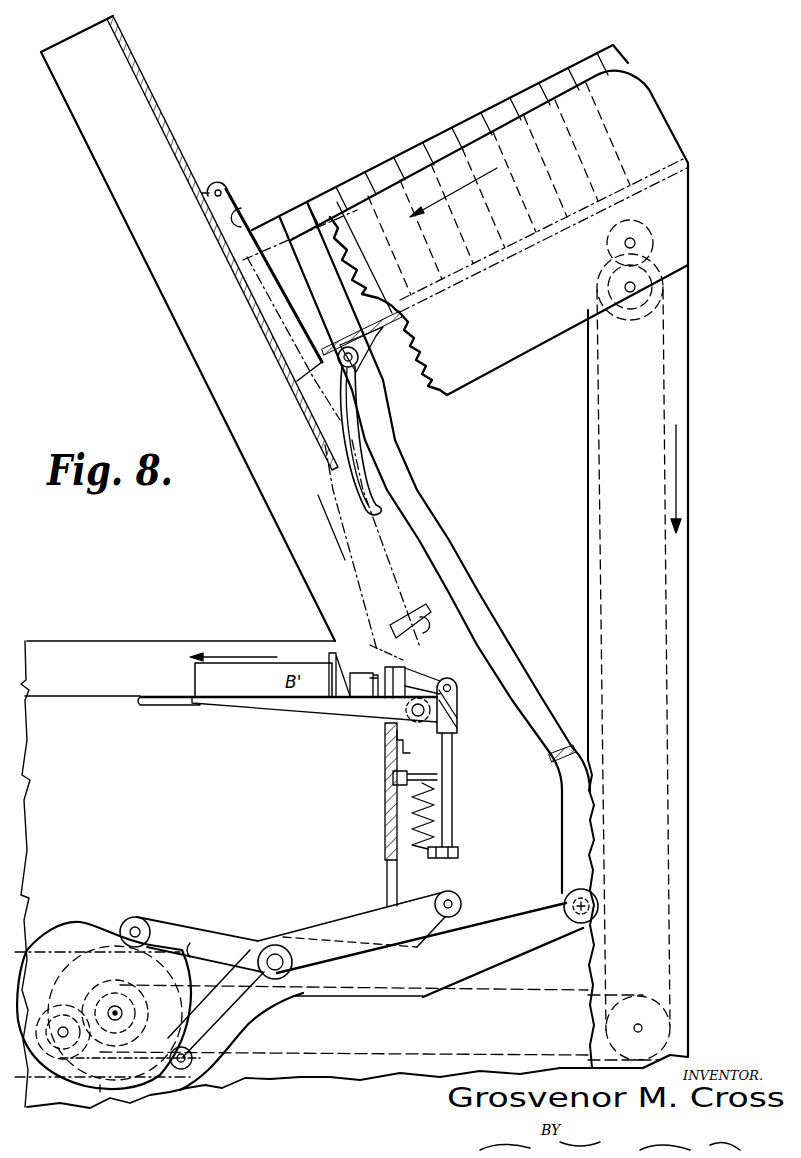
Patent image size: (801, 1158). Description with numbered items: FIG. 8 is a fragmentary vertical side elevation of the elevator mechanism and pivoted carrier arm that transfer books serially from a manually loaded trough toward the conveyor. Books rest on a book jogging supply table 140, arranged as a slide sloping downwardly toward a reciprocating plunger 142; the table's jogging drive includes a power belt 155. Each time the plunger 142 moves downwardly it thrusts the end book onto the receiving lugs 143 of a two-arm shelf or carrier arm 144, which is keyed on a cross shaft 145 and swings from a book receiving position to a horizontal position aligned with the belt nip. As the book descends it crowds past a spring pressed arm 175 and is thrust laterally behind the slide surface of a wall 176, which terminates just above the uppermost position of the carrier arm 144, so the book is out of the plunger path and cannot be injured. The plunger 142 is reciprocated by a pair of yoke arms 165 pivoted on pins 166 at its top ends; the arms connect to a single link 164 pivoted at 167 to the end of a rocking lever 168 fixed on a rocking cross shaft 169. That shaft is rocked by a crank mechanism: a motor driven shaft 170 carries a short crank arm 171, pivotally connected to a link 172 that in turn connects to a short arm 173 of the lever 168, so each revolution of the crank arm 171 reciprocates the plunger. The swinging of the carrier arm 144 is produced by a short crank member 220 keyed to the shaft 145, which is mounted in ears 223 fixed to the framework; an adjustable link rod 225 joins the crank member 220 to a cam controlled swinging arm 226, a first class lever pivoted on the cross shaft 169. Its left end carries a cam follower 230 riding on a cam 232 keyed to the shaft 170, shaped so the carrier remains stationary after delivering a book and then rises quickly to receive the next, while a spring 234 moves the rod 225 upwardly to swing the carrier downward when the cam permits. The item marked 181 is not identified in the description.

The supply table 140 is at (492, 263).
The reciprocating plunger 142 is at (302, 388).
The receiving lug 143 is at (337, 655).
The carrier arm 144 is at (345, 560).
The cross shaft 145 is at (424, 712).
The power belt 155 is at (638, 615).
The link 164 is at (560, 852).
The yoke arm 165 is at (237, 212).
The pin 166 is at (220, 190).
The pivot 167 is at (565, 893).
The rocking lever 168 is at (430, 950).
The rocking cross shaft 169 is at (282, 992).
The shaft 170 is at (118, 1032).
The crank arm 171 is at (115, 1013).
The link 172 is at (150, 1082).
The short arm 173 is at (276, 1018).
The spring pressed arm 175 is at (352, 482).
The wall 176 is at (328, 418).
The stop block 181 is at (360, 690).
The crank member 220 is at (440, 678).
The ears 223 is at (413, 678).
The adjustable link rod 225 is at (450, 785).
The cam controlled swinging arm 226 is at (200, 932).
The cam follower 230 is at (142, 920).
The cam 232 is at (98, 1118).
The spring 234 is at (411, 814).